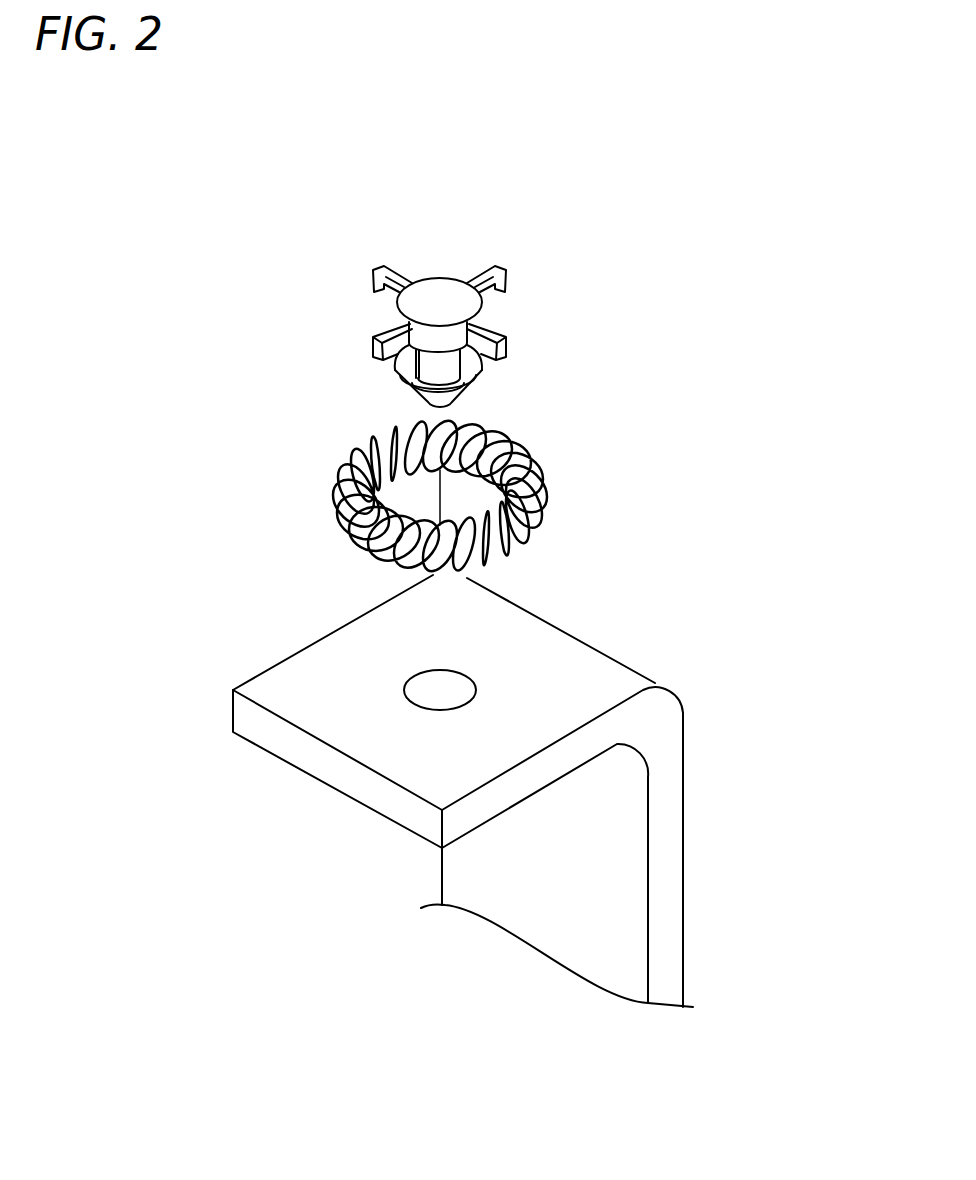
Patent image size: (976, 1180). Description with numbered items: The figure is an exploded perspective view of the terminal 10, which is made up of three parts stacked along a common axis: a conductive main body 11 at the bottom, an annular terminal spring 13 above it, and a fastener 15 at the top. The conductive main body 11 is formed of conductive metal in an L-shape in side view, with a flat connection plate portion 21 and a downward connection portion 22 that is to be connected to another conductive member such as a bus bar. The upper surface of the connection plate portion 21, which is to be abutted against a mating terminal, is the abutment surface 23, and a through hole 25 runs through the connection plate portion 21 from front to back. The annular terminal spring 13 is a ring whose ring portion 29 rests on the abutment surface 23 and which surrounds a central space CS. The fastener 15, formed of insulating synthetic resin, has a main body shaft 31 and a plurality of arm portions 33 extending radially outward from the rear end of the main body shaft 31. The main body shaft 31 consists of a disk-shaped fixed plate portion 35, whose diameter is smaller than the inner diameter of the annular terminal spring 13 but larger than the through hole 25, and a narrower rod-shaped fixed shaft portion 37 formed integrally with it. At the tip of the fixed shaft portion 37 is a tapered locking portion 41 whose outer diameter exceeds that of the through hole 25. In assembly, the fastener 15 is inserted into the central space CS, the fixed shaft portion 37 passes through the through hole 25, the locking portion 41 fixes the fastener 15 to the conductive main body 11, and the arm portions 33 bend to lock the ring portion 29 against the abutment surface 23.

The terminal 10 is at (240, 302).
The conductive main body 11 is at (249, 670).
The annular terminal spring 13 is at (324, 460).
The fastener 15 is at (448, 264).
The connection plate portion 21 is at (307, 760).
The connection portion 22 is at (667, 863).
The abutment surface 23 is at (327, 657).
The through hole 25 is at (450, 693).
The ring portion 29 is at (552, 470).
The central space CS is at (380, 427).
The main body shaft 31 is at (425, 287).
The arm portions 33 is at (388, 268).
The fixed plate portion 35 is at (487, 310).
The fixed shaft portion 37 is at (462, 363).
The locking portion 41 is at (457, 393).